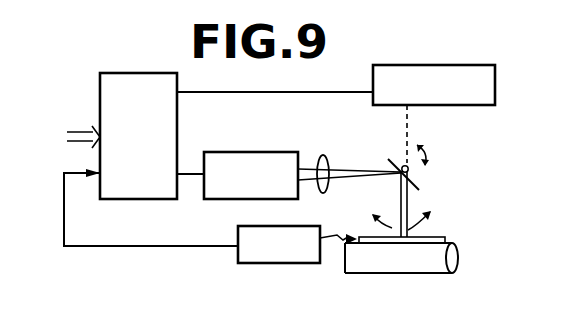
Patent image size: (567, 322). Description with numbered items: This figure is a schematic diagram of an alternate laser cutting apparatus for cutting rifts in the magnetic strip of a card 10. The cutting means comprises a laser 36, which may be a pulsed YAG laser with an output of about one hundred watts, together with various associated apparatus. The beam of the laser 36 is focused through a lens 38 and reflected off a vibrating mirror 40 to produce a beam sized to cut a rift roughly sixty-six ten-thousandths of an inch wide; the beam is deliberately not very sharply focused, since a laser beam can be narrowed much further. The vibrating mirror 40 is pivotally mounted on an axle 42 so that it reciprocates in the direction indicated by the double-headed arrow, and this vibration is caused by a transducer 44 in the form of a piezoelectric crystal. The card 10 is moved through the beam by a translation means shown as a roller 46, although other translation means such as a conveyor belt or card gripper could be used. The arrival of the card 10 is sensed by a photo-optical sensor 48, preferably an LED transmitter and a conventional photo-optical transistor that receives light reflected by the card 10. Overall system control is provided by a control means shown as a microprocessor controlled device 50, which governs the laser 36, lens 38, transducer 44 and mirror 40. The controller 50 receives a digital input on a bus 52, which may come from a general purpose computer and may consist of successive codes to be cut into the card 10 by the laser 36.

The card 10 is at (445, 240).
The laser 36 is at (279, 126).
The lens 38 is at (323, 156).
The vibrating mirror 40 is at (418, 178).
The axle 42 is at (427, 173).
The transducer 44 is at (495, 82).
The roller 46 is at (417, 273).
The photo-optical sensor 48 is at (268, 263).
The microprocessor controlled device 50 is at (100, 88).
The bus 52 is at (81, 104).